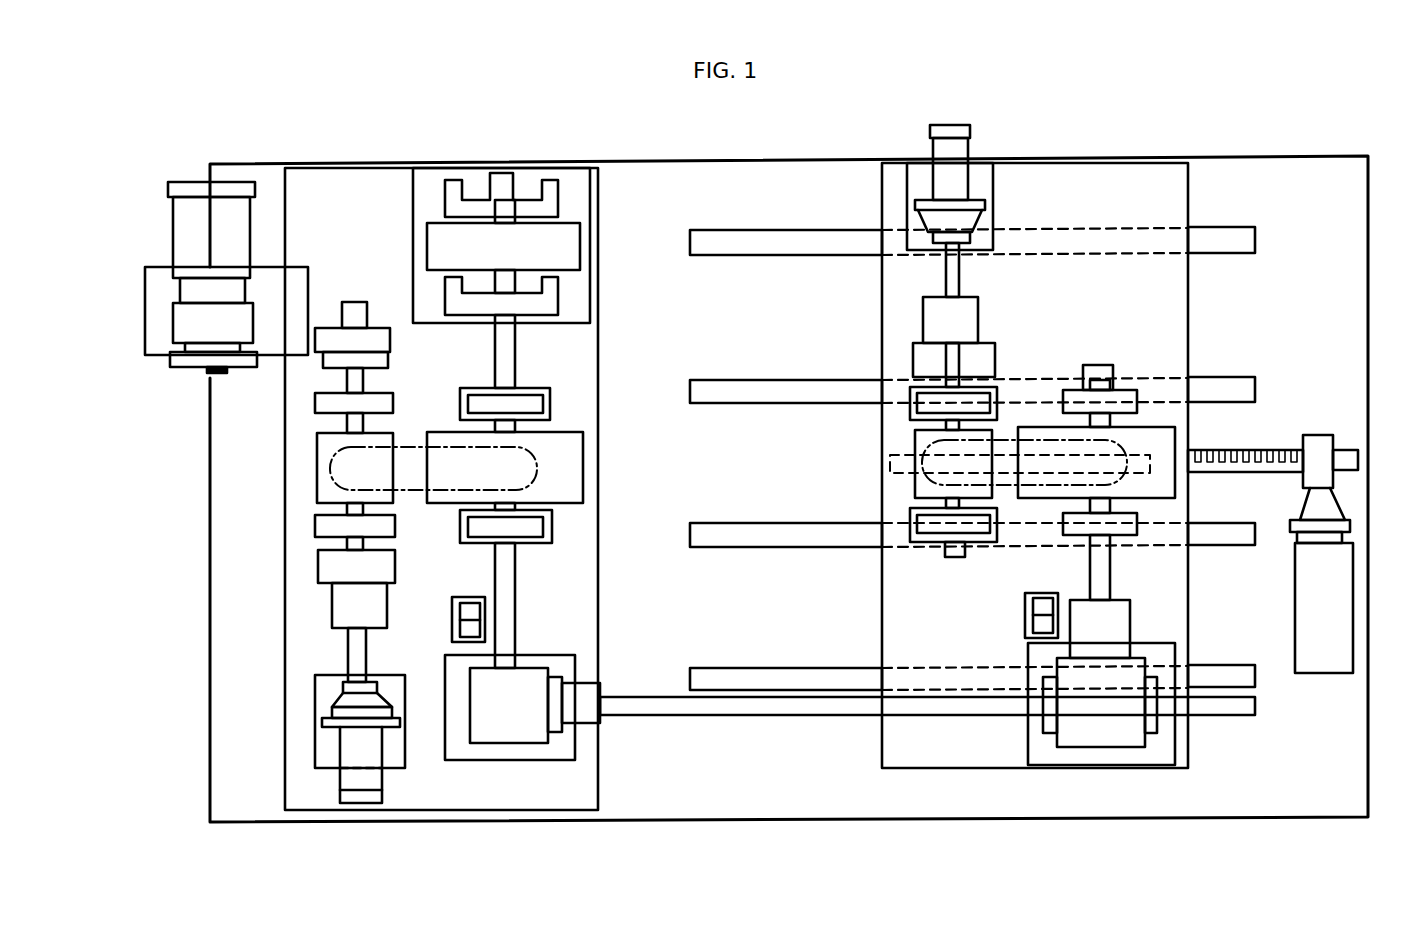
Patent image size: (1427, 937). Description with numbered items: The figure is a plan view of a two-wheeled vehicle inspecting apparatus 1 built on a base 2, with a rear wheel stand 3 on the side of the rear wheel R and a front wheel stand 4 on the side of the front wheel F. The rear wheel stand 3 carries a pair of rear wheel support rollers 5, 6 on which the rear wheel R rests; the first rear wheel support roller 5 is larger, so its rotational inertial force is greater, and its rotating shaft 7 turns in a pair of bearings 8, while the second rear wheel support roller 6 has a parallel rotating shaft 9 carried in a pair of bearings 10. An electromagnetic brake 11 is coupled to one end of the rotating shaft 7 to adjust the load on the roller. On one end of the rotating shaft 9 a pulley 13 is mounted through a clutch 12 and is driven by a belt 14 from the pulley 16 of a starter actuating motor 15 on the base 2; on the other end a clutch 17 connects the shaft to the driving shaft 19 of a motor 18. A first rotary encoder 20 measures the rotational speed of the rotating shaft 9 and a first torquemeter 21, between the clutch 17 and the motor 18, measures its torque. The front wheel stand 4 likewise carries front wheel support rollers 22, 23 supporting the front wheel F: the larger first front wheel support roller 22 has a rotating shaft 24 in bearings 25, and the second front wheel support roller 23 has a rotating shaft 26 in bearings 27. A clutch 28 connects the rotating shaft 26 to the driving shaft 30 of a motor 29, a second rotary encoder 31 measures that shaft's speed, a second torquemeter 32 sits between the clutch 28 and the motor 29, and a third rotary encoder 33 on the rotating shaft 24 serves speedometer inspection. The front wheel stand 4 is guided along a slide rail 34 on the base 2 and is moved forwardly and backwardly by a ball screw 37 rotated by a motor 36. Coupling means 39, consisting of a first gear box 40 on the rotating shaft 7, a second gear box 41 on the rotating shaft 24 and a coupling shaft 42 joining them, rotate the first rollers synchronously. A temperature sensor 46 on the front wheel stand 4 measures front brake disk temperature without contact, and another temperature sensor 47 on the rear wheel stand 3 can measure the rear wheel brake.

The two-wheeled vehicle inspecting apparatus 1 is at (1333, 108).
The base 2 is at (1250, 157).
The rear wheel stand 3 is at (372, 166).
The front wheel stand 4 is at (1095, 180).
The first rear wheel support roller 5 is at (580, 440).
The second rear wheel support roller 6 is at (320, 450).
The rotating shaft 7 is at (513, 352).
The bearings 8 is at (530, 395).
The rotating shaft 9 is at (365, 378).
The bearings 10 is at (315, 405).
The electromagnetic brake 11 is at (560, 240).
The clutch 12 is at (378, 345).
The pulley 13 is at (390, 362).
The belt 14 is at (273, 362).
The starter actuating motor 15 is at (195, 237).
The pulley 16 is at (180, 370).
The clutch 17 is at (378, 563).
The motor 18 is at (372, 775).
The driving shaft 19 is at (368, 645).
The first rotary encoder 20 is at (355, 310).
The first torquemeter 21 is at (340, 600).
The first front wheel support roller 22 is at (1175, 438).
The second front wheel support roller 23 is at (920, 440).
The rotating shaft 24 is at (1130, 415).
The bearings 25 is at (1125, 390).
The rotating shaft 26 is at (925, 395).
The bearings 27 is at (1000, 395).
The clutch 28 is at (935, 360).
The motor 29 is at (960, 148).
The driving shaft 30 is at (958, 270).
The second rotary encoder 31 is at (957, 557).
The second torquemeter 32 is at (937, 307).
The third rotary encoder 33 is at (1093, 362).
The slide rail 34 is at (745, 243).
The motor 36 is at (1340, 613).
The ball screw 37 is at (1220, 472).
The coupling means 39 is at (720, 722).
The first gear box 40 is at (523, 727).
The second gear box 41 is at (1107, 732).
The coupling shaft 42 is at (820, 698).
The temperature sensor 46 is at (1025, 628).
The temperature sensor 47 is at (486, 628).
The rear wheel R is at (540, 462).
The front wheel F is at (890, 476).